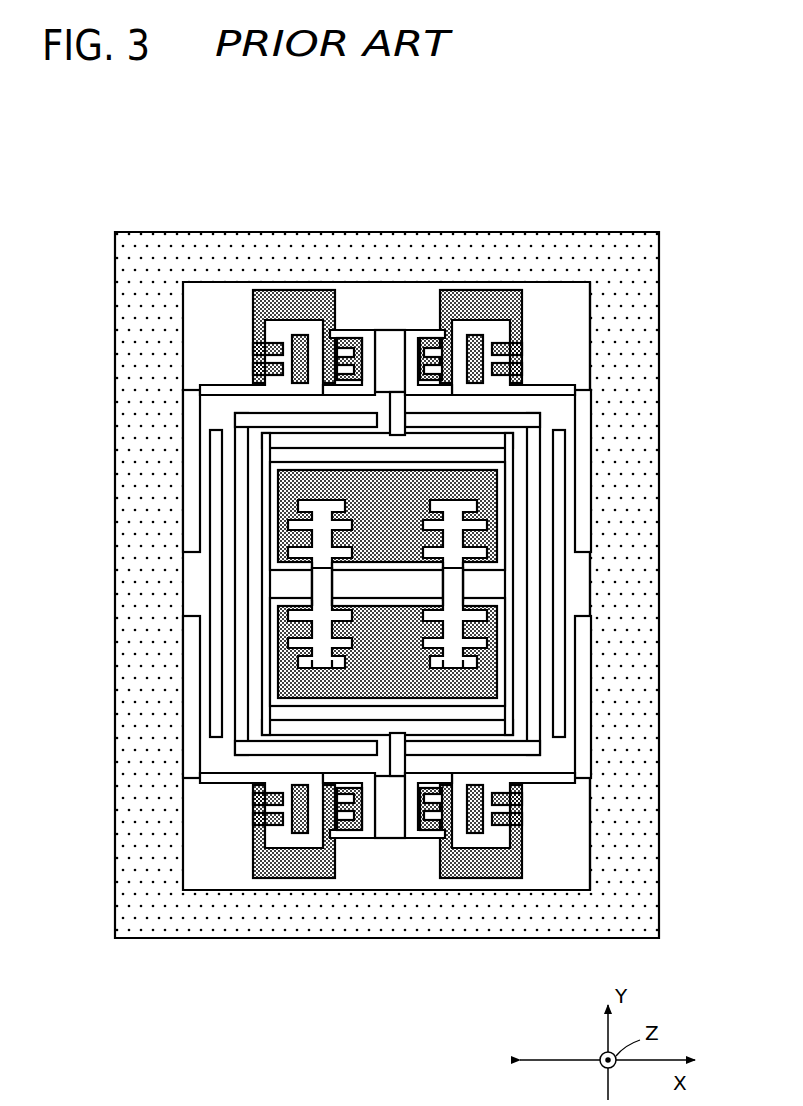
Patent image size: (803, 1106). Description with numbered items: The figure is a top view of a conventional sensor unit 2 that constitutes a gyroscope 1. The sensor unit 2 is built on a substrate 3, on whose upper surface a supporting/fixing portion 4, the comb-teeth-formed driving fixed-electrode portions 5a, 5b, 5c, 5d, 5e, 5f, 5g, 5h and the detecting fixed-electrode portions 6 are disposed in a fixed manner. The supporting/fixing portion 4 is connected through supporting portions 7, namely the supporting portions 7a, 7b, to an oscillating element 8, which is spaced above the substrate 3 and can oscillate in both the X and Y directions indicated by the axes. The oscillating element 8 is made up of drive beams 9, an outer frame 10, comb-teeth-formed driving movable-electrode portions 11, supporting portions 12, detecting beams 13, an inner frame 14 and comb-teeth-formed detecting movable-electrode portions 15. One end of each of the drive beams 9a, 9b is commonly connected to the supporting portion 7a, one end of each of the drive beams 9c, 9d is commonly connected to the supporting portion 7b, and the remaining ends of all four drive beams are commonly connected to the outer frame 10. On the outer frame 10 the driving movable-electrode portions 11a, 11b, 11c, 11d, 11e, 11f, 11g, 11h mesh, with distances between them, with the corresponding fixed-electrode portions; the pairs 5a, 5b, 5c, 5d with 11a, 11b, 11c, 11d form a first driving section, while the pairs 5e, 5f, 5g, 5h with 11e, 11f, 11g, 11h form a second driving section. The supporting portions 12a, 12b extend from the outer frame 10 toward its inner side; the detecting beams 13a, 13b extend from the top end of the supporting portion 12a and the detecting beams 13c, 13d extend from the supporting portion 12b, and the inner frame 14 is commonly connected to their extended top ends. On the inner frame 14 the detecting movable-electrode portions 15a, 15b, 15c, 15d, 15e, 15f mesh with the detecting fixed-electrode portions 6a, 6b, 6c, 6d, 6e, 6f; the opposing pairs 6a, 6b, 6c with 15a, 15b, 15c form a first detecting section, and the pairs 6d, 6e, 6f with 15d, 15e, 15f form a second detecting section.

The gyroscope 1 is at (437, 155).
The sensor unit 2 is at (471, 199).
The substrate 3 is at (585, 362).
The supporting/fixing portion 4 is at (347, 245).
The comb-teeth-formed driving fixed-electrode portion 5a is at (258, 343).
The comb-teeth-formed driving fixed-electrode portion 5b is at (350, 345).
The comb-teeth-formed driving fixed-electrode portion 5c is at (430, 345).
The comb-teeth-formed driving fixed-electrode portion 5d is at (505, 350).
The comb-teeth-formed driving fixed-electrode portion 5e is at (263, 818).
The comb-teeth-formed driving fixed-electrode portion 5f is at (343, 838).
The comb-teeth-formed driving fixed-electrode portion 5g is at (440, 838).
The comb-teeth-formed driving fixed-electrode portion 5h is at (495, 815).
The detecting fixed-electrode portions 6 is at (264, 584).
The comb-teeth-formed detecting fixed-electrode portion 6a is at (288, 527).
The comb-teeth-formed detecting fixed-electrode portion 6b is at (352, 523).
The comb-teeth-formed detecting fixed-electrode portion 6c is at (468, 528).
The comb-teeth-formed detecting fixed-electrode portion 6d is at (288, 660).
The comb-teeth-formed detecting fixed-electrode portion 6e is at (352, 635).
The comb-teeth-formed detecting fixed-electrode portion 6f is at (468, 648).
The supporting portions 7 is at (382, 613).
The supporting portion 7a is at (185, 608).
The supporting portion 7b is at (582, 607).
The oscillating element 8 is at (361, 584).
The drive beams 9 is at (384, 584).
The drive beam 9a is at (198, 530).
The drive beam 9b is at (205, 712).
The drive beam 9c is at (570, 513).
The drive beam 9d is at (570, 722).
The outer frame 10 is at (228, 482).
The comb-teeth-formed driving movable-electrode portions 11 is at (392, 583).
The comb-teeth-formed driving movable-electrode portion 11a is at (262, 370).
The comb-teeth-formed driving movable-electrode portion 11b is at (350, 335).
The comb-teeth-formed driving movable-electrode portion 11c is at (393, 373).
The comb-teeth-formed driving movable-electrode portion 11d is at (507, 352).
The comb-teeth-formed driving movable-electrode portion 11e is at (267, 847).
The comb-teeth-formed driving movable-electrode portion 11f is at (390, 862).
The comb-teeth-formed driving movable-electrode portion 11g is at (410, 815).
The comb-teeth-formed driving movable-electrode portion 11h is at (500, 845).
The supporting portions 12 is at (418, 584).
The supporting portion 12a is at (390, 428).
The supporting portion 12b is at (398, 740).
The detecting beams 13 is at (405, 585).
The detecting beam 13a is at (307, 433).
The detecting beam 13b is at (467, 433).
The detecting beam 13c is at (287, 745).
The detecting beam 13d is at (493, 748).
The inner frame 14 is at (220, 583).
The comb-teeth-formed detecting movable-electrode portions 15 is at (269, 667).
The comb-teeth-formed detecting movable-electrode portion 15a is at (298, 558).
The comb-teeth-formed detecting movable-electrode portion 15b is at (352, 558).
The comb-teeth-formed detecting movable-electrode portion 15c is at (465, 558).
The comb-teeth-formed detecting movable-electrode portion 15d is at (298, 668).
The comb-teeth-formed detecting movable-electrode portion 15e is at (332, 668).
The comb-teeth-formed detecting movable-electrode portion 15f is at (455, 668).